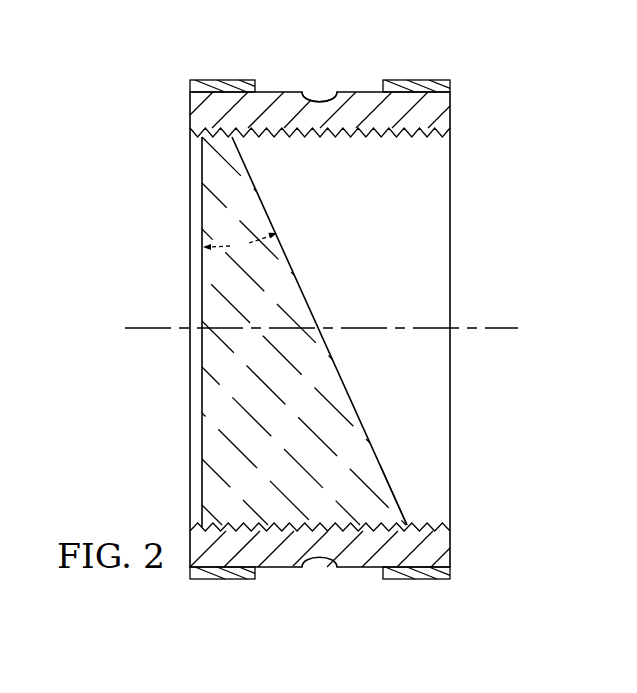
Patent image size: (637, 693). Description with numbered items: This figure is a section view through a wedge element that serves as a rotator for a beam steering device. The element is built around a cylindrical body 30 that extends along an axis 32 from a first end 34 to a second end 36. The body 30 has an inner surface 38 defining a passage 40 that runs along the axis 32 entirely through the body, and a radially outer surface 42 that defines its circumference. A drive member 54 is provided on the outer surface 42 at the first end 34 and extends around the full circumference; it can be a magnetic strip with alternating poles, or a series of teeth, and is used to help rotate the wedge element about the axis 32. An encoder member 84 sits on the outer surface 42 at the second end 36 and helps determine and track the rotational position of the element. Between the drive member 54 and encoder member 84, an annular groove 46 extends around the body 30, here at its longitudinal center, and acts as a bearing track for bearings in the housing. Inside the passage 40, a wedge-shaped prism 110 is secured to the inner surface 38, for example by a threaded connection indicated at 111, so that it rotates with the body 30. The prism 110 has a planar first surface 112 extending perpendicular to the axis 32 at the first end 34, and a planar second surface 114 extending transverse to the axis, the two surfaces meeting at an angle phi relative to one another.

The cylindrical body 30 is at (442, 542).
The axis 32 is at (490, 333).
The first end 34 is at (188, 592).
The second end 36 is at (450, 592).
The inner surface 38 is at (393, 137).
The passage 40 is at (436, 224).
The radially outer surface 42 is at (268, 92).
The annular groove 46 is at (323, 101).
The drive member 54 is at (235, 88).
The encoder member 84 is at (428, 88).
The wedge-shaped prism 110 is at (281, 332).
The threaded connection 111 is at (373, 523).
The first surface 112 is at (200, 433).
The second surface 114 is at (306, 298).